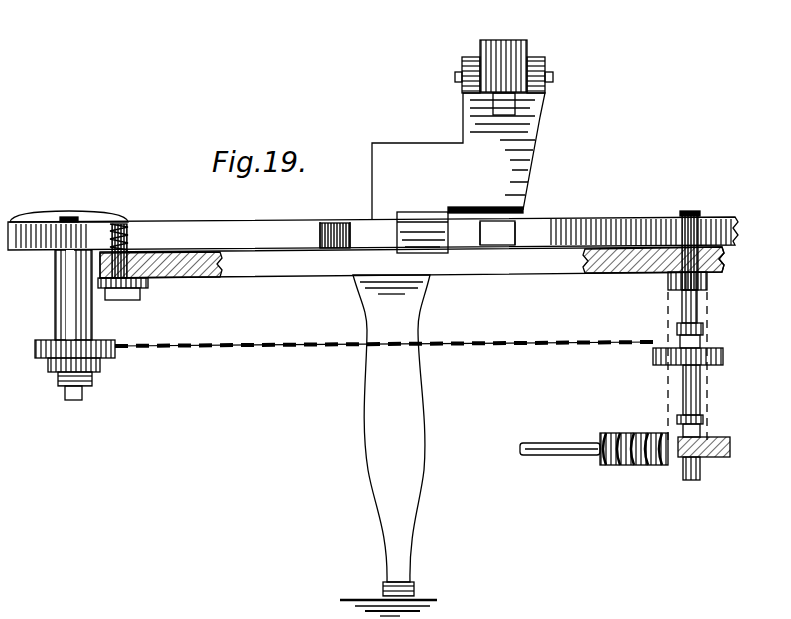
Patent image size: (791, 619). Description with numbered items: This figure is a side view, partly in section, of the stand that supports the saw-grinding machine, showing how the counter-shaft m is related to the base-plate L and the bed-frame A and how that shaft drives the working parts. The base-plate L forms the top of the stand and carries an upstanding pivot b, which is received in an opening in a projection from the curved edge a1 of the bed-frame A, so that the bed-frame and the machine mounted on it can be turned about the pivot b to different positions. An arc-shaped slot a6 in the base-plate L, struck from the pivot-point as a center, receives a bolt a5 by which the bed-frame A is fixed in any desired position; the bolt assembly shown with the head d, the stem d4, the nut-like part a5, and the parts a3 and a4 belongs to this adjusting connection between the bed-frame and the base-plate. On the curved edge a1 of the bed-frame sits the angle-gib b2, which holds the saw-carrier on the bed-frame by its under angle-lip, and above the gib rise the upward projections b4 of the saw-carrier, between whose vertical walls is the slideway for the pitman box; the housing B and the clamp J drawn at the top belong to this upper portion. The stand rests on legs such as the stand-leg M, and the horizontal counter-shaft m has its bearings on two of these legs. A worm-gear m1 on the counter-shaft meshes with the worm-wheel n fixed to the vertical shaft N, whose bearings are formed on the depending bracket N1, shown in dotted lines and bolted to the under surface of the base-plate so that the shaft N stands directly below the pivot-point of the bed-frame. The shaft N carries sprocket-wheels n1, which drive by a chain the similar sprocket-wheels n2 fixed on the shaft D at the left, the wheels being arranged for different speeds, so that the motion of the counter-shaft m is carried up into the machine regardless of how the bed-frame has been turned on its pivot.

The bed-frame A is at (373, 223).
The base-plate L is at (412, 274).
The stand-leg M is at (388, 445).
The bracket B is at (458, 156).
The upward projections b4 is at (502, 147).
The clamp J is at (504, 66).
The angle-gib b2 is at (422, 232).
The slot a4 is at (349, 235).
The curved edge a1 is at (497, 233).
The knob d is at (69, 204).
The screw stem d4 is at (70, 308).
The slot a6 is at (133, 250).
The bolt a5 is at (123, 293).
The shaft D is at (75, 378).
The sprocket-wheels n2 is at (57, 369).
The pivot bolt a3 is at (690, 241).
The pivot b is at (716, 263).
The depending bracket N1 is at (700, 305).
The sprocket-wheels n1 is at (700, 347).
The vertical shaft N is at (700, 392).
The worm-wheel n is at (711, 438).
The worm-gear m1 is at (634, 438).
The counter-shaft m is at (560, 439).